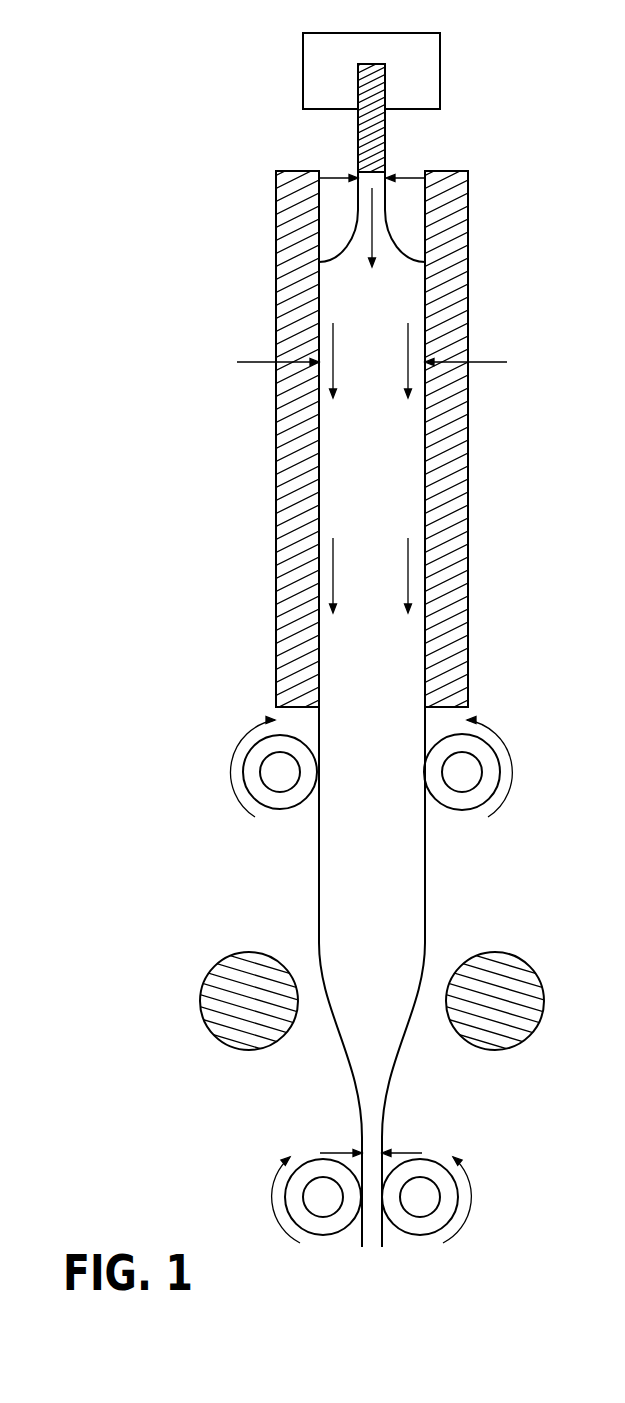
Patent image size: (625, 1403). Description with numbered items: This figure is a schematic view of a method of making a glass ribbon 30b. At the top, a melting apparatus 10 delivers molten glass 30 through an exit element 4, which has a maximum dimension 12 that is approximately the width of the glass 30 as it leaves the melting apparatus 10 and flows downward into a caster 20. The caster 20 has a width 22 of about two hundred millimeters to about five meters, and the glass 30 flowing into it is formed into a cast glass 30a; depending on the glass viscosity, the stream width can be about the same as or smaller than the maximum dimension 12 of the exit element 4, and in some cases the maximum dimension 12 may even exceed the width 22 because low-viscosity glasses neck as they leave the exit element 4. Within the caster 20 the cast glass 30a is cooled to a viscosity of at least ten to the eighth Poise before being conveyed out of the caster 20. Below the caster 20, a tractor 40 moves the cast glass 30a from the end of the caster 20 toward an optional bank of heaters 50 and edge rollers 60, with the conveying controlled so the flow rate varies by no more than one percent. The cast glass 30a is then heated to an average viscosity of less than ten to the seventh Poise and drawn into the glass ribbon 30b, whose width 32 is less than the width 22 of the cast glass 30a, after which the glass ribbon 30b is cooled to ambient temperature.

The melting apparatus 10 is at (440, 58).
The glass 30 is at (368, 93).
The exit element 4 is at (387, 145).
The maximum dimension 12 is at (330, 173).
The caster 20 is at (468, 272).
The width 22 is at (490, 362).
The cast glass 30a is at (385, 487).
The tractor 40 is at (457, 797).
The bank of heaters 50 is at (492, 968).
The width 32 is at (404, 1150).
The edge rollers 60 is at (437, 1170).
The glass ribbon 30b is at (373, 1240).